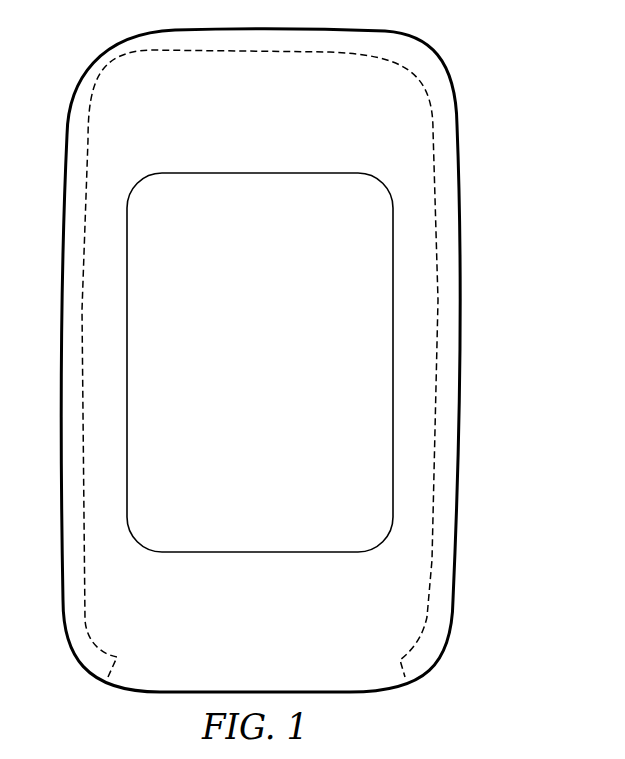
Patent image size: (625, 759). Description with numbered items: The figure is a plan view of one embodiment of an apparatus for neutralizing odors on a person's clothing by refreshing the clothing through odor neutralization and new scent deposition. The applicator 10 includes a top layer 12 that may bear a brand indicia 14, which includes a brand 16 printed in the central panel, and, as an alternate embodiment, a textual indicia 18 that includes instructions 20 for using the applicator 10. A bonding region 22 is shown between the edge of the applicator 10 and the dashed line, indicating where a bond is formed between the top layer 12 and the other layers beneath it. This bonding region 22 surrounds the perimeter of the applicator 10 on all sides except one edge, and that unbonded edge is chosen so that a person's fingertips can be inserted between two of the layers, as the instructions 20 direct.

The applicator 10 is at (298, 352).
The top layer 12 is at (122, 83).
The brand indicia 14 is at (200, 172).
The brand 16 is at (223, 340).
The textual indicia 18 is at (200, 575).
The instructions 20 is at (378, 592).
The bonding region 22 is at (433, 130).